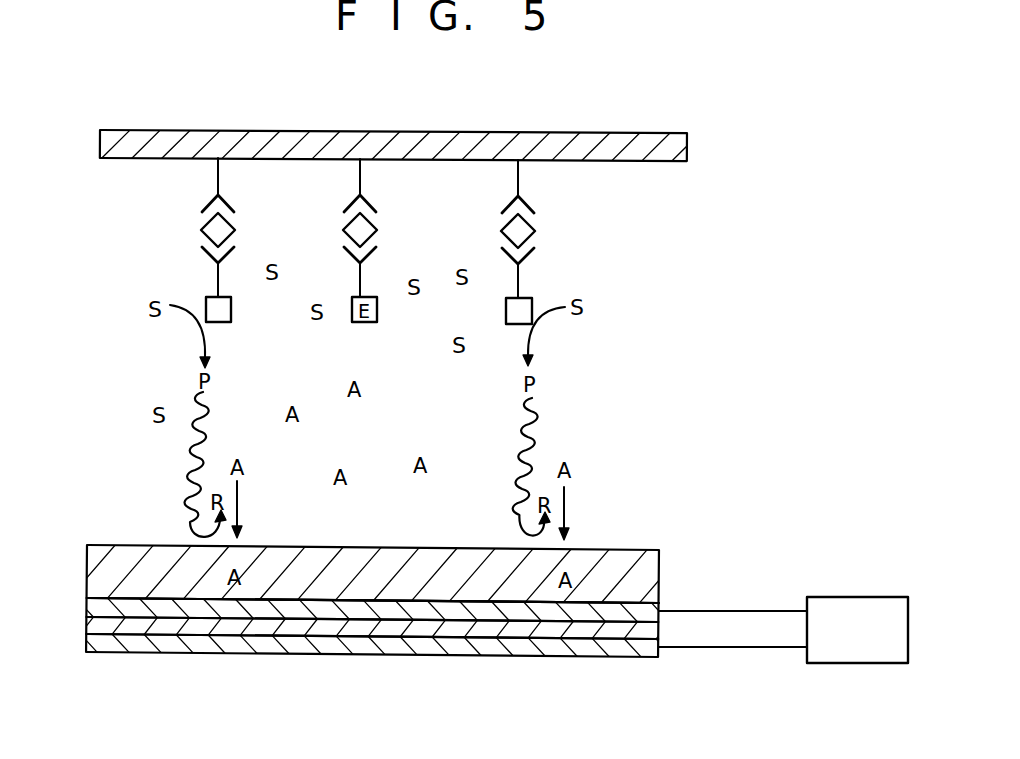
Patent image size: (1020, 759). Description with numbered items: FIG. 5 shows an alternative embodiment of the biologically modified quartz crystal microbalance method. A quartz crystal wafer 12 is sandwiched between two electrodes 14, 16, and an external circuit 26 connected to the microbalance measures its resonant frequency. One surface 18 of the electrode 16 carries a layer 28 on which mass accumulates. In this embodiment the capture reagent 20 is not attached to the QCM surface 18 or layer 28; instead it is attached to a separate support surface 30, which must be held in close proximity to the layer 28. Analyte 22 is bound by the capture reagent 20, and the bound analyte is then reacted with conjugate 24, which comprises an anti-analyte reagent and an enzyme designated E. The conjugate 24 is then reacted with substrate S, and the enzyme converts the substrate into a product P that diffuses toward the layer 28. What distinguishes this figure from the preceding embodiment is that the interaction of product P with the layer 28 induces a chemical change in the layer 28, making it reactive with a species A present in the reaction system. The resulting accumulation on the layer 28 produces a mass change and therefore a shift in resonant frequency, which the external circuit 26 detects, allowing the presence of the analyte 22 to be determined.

The quartz crystal wafer 12 is at (157, 625).
The electrode 14 is at (260, 645).
The electrode 16 is at (643, 612).
The surface 18 is at (631, 610).
The capture reagent 20 is at (523, 182).
The analyte 22 is at (193, 233).
The conjugate 24 is at (535, 273).
The external circuit 26 is at (858, 645).
The layer 28 is at (115, 573).
The support surface 30 is at (633, 162).